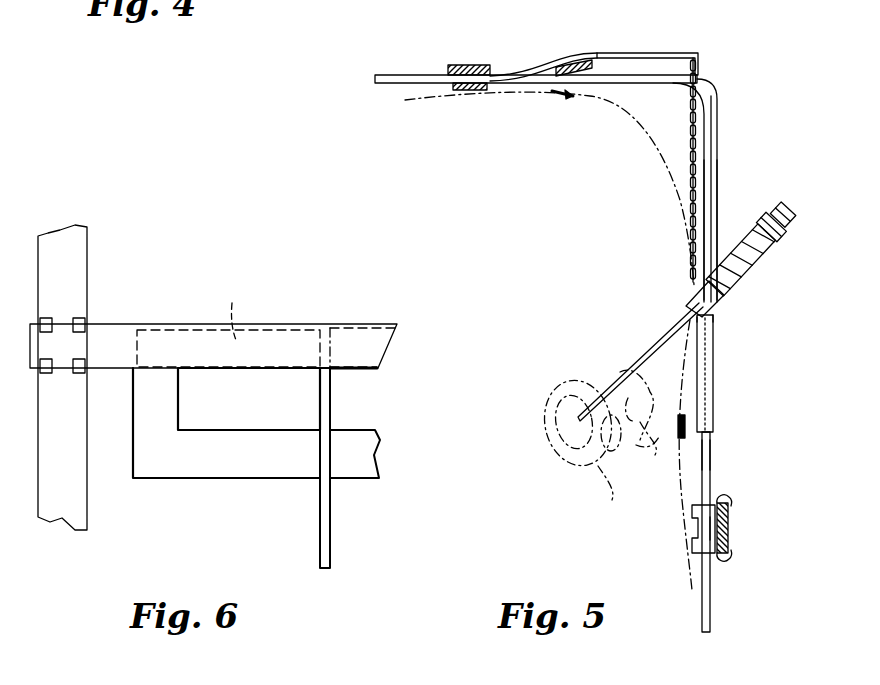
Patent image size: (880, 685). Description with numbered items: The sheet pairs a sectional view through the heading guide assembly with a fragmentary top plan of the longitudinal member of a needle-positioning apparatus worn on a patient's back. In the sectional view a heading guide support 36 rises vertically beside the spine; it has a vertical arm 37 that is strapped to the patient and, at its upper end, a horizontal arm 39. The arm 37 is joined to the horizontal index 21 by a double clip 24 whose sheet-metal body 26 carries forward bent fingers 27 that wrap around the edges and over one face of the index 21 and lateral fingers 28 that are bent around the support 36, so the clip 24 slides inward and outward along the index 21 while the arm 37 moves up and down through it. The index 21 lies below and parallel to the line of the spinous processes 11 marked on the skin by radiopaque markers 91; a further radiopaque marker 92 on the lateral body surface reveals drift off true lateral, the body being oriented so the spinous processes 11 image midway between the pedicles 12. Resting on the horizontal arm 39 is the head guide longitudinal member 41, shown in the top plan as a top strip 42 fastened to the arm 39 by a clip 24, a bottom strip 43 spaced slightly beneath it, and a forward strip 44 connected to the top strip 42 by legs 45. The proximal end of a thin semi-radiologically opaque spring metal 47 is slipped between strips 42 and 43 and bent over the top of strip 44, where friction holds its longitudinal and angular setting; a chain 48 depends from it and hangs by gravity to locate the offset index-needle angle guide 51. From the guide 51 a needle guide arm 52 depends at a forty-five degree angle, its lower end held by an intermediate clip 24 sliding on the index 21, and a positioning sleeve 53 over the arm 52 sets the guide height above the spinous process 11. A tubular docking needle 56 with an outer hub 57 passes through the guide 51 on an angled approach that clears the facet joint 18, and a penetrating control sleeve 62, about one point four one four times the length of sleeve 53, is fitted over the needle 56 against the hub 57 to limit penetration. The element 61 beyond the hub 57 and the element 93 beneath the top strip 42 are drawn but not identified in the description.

In FIG. 5, the spinous processes 11 is at (656, 425).
In FIG. 5, the vertebral pedicle 12 is at (598, 429).
In FIG. 5, the facet joint 18 is at (630, 396).
In FIG. 5, the horizontal index 21 is at (729, 526).
In FIG. 5, the double clip 24 is at (712, 452).
In FIG. 6, the double clip 24 is at (88, 318).
In FIG. 5, the clip body 26 is at (700, 532).
In FIG. 5, the forward bent fingers 27 is at (731, 497).
In FIG. 5, the lateral fingers 28 is at (694, 510).
In FIG. 5, the heading guide support 36 is at (719, 98).
In FIG. 6, the heading guide support 36 is at (88, 245).
In FIG. 5, the vertical arm 37 is at (713, 161).
In FIG. 5, the horizontal arm 39 is at (398, 72).
In FIG. 6, the horizontal arm 39 is at (75, 282).
In FIG. 5, the head guide longitudinal member 41 is at (512, 72).
In FIG. 5, the top strip 42 is at (470, 66).
In FIG. 6, the top strip 42 is at (298, 340).
In FIG. 6, the bottom strip 43 is at (230, 297).
In FIG. 5, the forward strip 44 is at (582, 75).
In FIG. 6, the forward strip 44 is at (226, 470).
In FIG. 6, the legs 45 is at (158, 408).
In FIG. 5, the spring metal 47 is at (618, 22).
In FIG. 6, the spring metal 47 is at (330, 392).
In FIG. 5, the chain 48 is at (700, 72).
In FIG. 5, the offset index-needle angle guide 51 is at (735, 310).
In FIG. 5, the needle guide arm 52 is at (710, 600).
In FIG. 5, the positioning sleeve 53 is at (713, 370).
In FIG. 5, the docking needle 56 is at (637, 362).
In FIG. 5, the hub 57 is at (762, 224).
In FIG. 5, the cap 61 is at (792, 223).
In FIG. 5, the penetrating control sleeve 62 is at (756, 268).
In FIG. 5, the radiopaque markers 91 is at (686, 426).
In FIG. 5, the radiopaque marker 92 is at (558, 93).
In FIG. 5, the lower guide block 93 is at (470, 92).